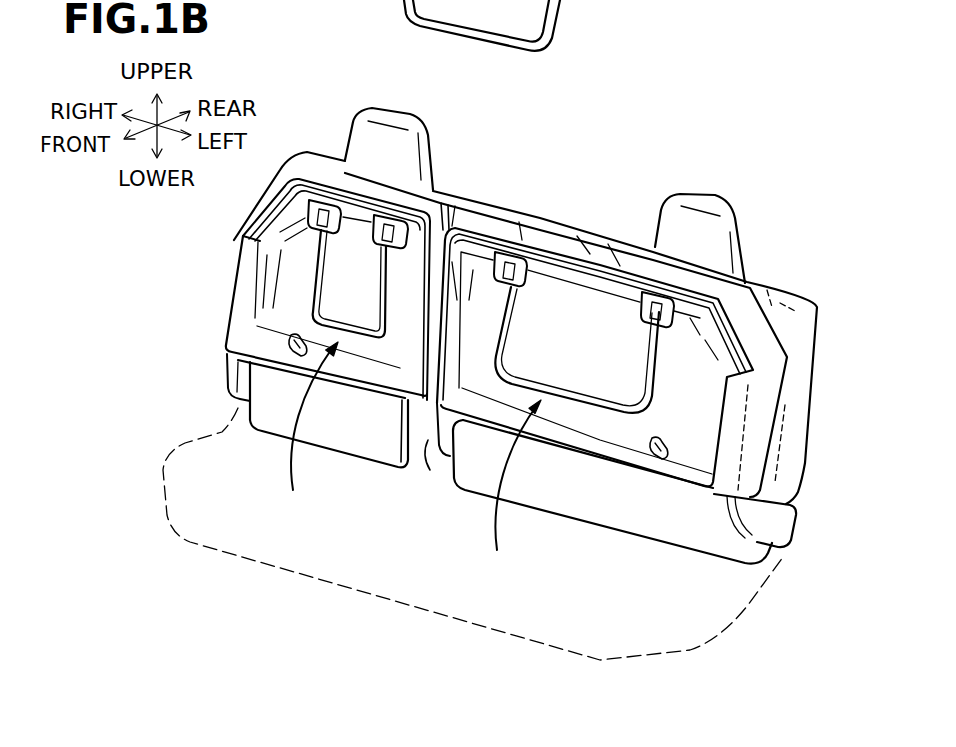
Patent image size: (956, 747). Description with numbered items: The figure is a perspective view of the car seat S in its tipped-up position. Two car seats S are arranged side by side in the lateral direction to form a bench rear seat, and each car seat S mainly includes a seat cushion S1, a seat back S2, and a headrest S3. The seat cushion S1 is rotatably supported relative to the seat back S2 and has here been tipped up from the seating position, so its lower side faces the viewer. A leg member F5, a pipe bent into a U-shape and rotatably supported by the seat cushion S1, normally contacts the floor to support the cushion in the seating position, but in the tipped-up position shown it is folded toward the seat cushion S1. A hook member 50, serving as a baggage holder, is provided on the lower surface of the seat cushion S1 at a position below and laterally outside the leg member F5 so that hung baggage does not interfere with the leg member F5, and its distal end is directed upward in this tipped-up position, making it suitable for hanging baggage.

The car seat S is at (320, 127).
The seat cushion S1 is at (233, 253).
The seat back S2 is at (452, 198).
The headrest S3 is at (425, 133).
The leg member F5 is at (338, 328).
The hook member 50 is at (288, 363).